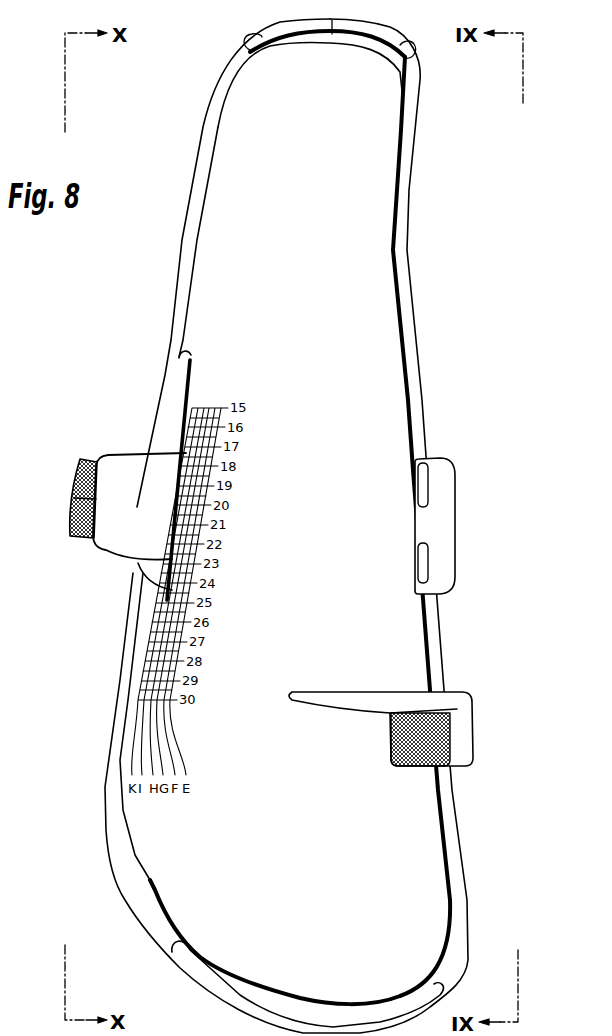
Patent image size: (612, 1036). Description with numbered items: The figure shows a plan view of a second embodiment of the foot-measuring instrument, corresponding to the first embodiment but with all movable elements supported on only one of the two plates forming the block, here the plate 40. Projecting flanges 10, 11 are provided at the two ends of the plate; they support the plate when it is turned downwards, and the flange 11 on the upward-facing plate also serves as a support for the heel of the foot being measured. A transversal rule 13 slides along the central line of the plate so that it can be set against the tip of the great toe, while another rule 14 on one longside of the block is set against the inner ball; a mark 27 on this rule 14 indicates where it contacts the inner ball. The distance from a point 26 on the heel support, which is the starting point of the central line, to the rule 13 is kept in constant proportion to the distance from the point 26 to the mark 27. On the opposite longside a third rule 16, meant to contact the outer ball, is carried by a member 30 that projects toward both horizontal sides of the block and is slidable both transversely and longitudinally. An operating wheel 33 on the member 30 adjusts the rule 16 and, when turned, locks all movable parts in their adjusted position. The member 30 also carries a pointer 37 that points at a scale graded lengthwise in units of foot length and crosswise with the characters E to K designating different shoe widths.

The projecting flange 10 is at (184, 967).
The projecting flange 11 is at (413, 50).
The transversal rule 13 is at (313, 698).
The rule 14 is at (453, 583).
The third rule 16 is at (175, 390).
The point on the heel support 26 is at (333, 35).
The mark 27 is at (425, 522).
The member 30 is at (113, 547).
The operating wheel 33 is at (83, 458).
The pointer 37 is at (157, 580).
The plate 40 is at (200, 273).